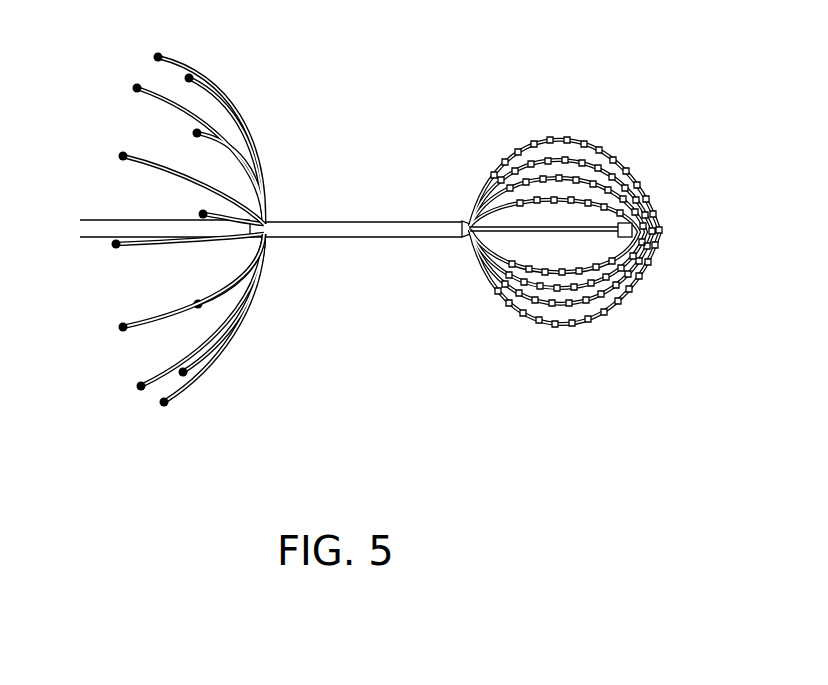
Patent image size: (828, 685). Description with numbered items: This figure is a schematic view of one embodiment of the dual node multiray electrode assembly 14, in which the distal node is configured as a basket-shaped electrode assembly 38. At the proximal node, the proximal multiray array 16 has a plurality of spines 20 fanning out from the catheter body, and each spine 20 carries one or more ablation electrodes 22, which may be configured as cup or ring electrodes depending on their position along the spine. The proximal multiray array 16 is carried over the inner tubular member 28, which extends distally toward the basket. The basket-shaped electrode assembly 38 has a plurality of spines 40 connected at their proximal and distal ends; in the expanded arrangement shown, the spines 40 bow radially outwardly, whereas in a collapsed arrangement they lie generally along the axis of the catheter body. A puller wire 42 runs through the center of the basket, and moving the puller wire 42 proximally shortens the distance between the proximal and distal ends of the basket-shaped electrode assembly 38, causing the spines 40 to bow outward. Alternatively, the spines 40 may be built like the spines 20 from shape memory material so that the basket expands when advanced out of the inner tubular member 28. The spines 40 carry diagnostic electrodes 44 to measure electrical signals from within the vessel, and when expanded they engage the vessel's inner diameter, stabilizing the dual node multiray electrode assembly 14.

The dual node multiray electrode assembly 14 is at (371, 260).
The proximal multiray array 16 is at (175, 260).
The spine 20 is at (158, 172).
The ablation electrode 22 is at (123, 320).
The inner tubular member 28 is at (358, 220).
The basket-shaped electrode assembly 38 is at (551, 253).
The spine 40 is at (587, 140).
The puller wire 42 is at (547, 235).
The diagnostic electrode 44 is at (553, 140).